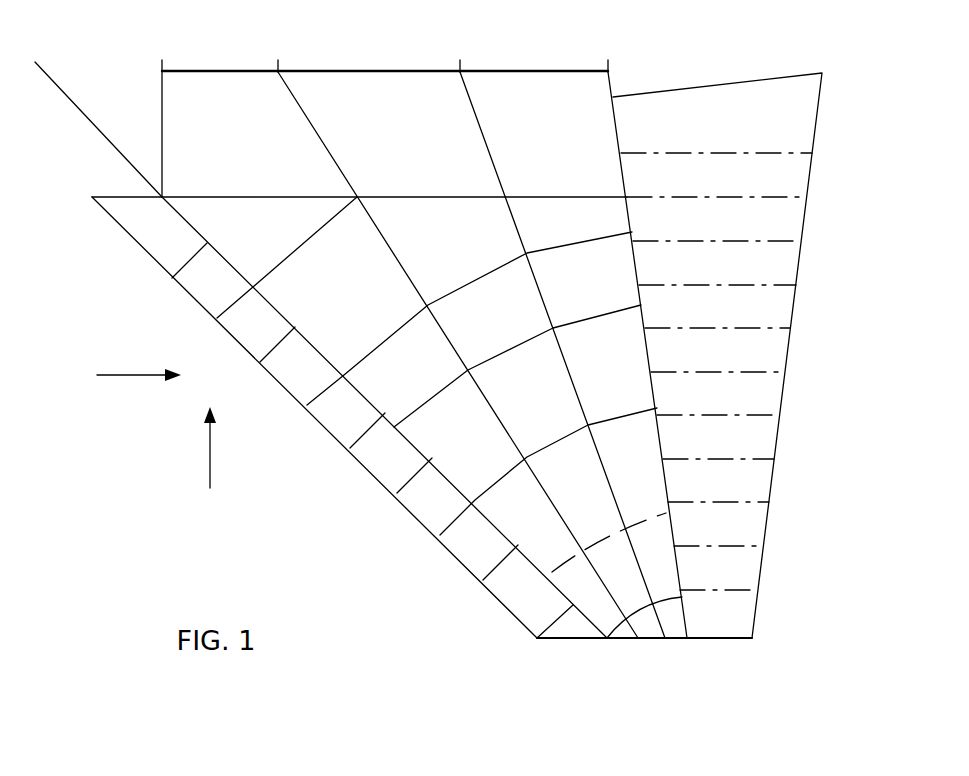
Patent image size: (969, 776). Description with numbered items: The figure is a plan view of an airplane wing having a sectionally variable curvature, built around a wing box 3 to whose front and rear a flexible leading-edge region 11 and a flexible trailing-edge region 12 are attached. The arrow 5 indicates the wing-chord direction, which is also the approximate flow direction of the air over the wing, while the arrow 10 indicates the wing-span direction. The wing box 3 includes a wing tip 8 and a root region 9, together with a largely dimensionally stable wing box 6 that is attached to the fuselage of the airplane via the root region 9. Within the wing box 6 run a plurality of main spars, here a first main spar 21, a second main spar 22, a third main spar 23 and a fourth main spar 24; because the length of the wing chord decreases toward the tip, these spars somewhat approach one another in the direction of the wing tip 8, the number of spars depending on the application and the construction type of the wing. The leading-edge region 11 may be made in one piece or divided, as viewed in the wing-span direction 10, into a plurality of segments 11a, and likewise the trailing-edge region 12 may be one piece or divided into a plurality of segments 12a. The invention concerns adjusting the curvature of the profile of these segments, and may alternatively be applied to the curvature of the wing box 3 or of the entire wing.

The wing box 3 is at (574, 86).
The wing-chord direction arrow 5 is at (139, 363).
The dimensionally stable wing box 6 is at (202, 212).
The wing tip 8 is at (586, 655).
The root region 9 is at (370, 71).
The wing-span direction 10 is at (195, 447).
The leading-edge region 11 is at (326, 466).
The segments 11a is at (408, 503).
The trailing-edge region 12 is at (830, 252).
The segments 12a is at (790, 300).
The first main spar 21 is at (229, 266).
The second main spar 22 is at (394, 248).
The third main spar 23 is at (517, 224).
The fourth main spar 24 is at (634, 254).